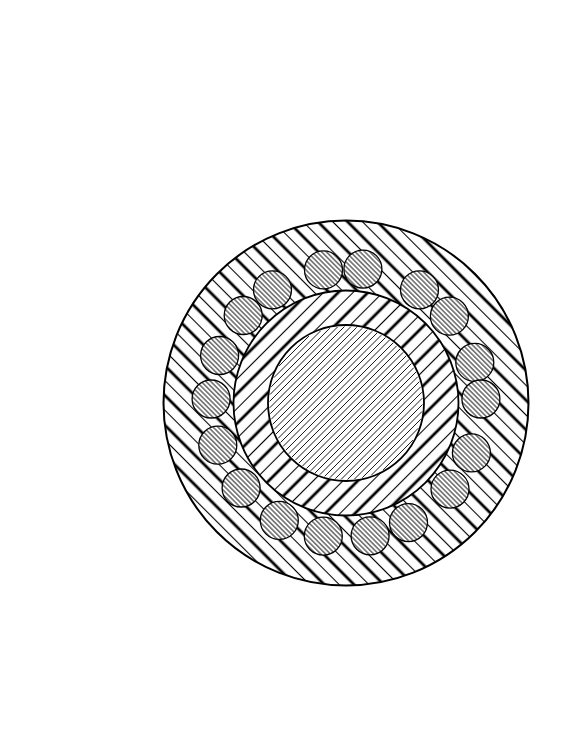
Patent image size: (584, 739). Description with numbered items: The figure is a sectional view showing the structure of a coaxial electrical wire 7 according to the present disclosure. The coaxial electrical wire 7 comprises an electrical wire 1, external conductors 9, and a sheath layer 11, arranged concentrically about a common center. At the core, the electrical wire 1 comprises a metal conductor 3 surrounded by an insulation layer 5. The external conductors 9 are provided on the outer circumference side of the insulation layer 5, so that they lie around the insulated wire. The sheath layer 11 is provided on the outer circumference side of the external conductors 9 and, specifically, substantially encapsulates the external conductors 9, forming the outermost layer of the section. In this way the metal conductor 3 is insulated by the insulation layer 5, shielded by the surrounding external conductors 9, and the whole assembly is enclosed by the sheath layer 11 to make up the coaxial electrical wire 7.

The coaxial electrical wire 7 is at (80, 172).
The sheath layer 11 is at (341, 238).
The external conductors 9 is at (268, 284).
The electrical wire 1 is at (246, 403).
The insulation layer 5 is at (262, 438).
The metal conductor 3 is at (305, 376).